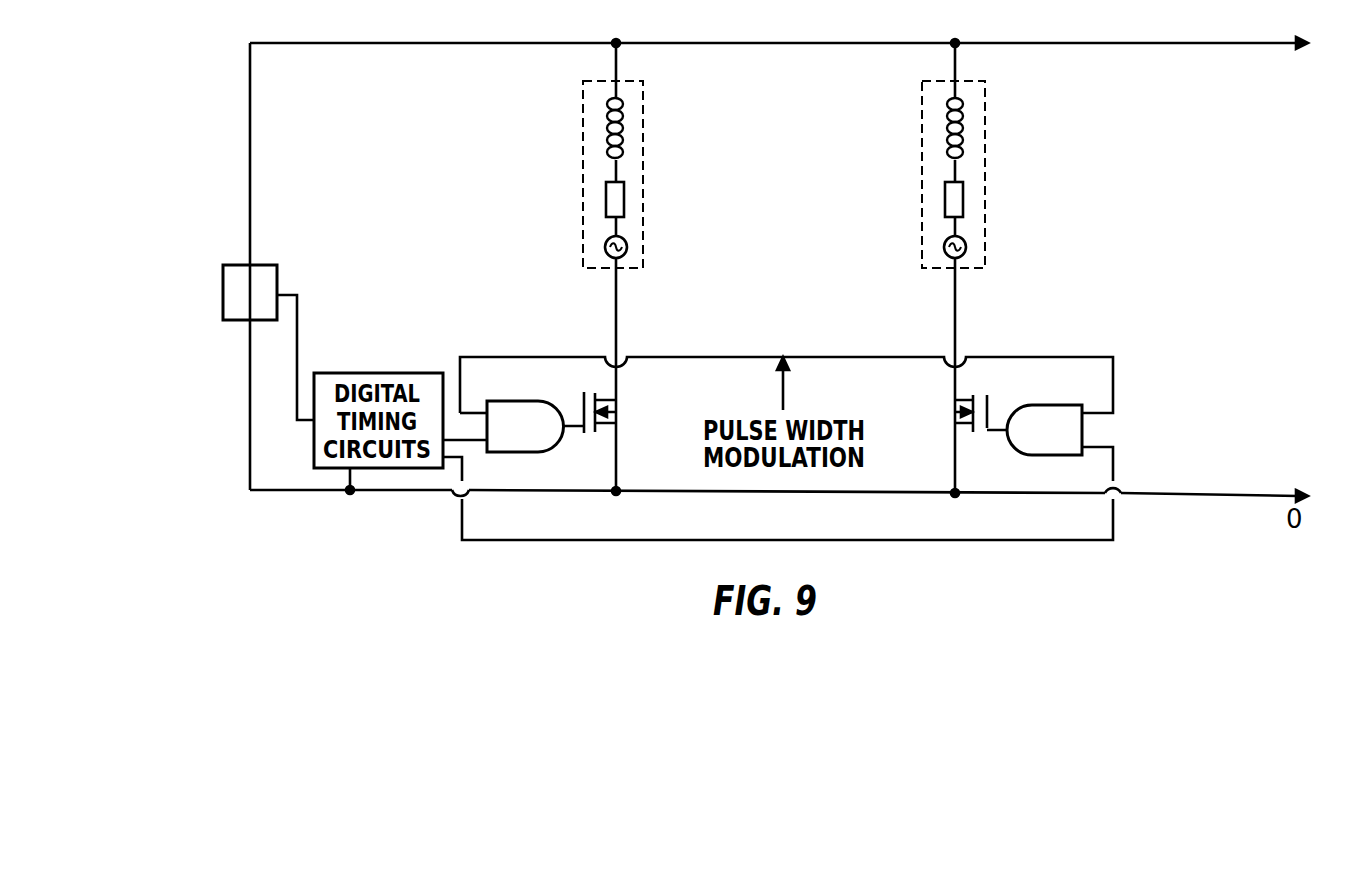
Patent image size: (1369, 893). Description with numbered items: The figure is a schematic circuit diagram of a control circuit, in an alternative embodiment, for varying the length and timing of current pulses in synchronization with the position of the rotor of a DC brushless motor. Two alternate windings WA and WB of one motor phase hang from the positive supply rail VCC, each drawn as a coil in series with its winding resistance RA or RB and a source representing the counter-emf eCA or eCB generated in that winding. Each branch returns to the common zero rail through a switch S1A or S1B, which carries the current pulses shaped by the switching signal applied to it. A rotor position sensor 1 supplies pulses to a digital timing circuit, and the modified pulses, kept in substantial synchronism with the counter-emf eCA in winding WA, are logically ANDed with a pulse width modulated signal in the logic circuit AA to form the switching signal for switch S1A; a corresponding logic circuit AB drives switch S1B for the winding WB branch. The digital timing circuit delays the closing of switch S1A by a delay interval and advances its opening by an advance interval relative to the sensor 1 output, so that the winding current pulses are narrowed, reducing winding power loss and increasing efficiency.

The rotor position sensor 1 is at (223, 270).
The winding WA is at (643, 177).
The winding resistance RA is at (624, 200).
The counter-emf eCA is at (627, 249).
The winding WB is at (920, 158).
The winding resistance RB is at (945, 200).
The counter-emf eCB is at (944, 247).
The logic circuit AA is at (525, 426).
The logic circuit AB is at (1044, 430).
The switch S1A is at (584, 433).
The switch S1B is at (988, 428).
The supply voltage VCC is at (1268, 55).